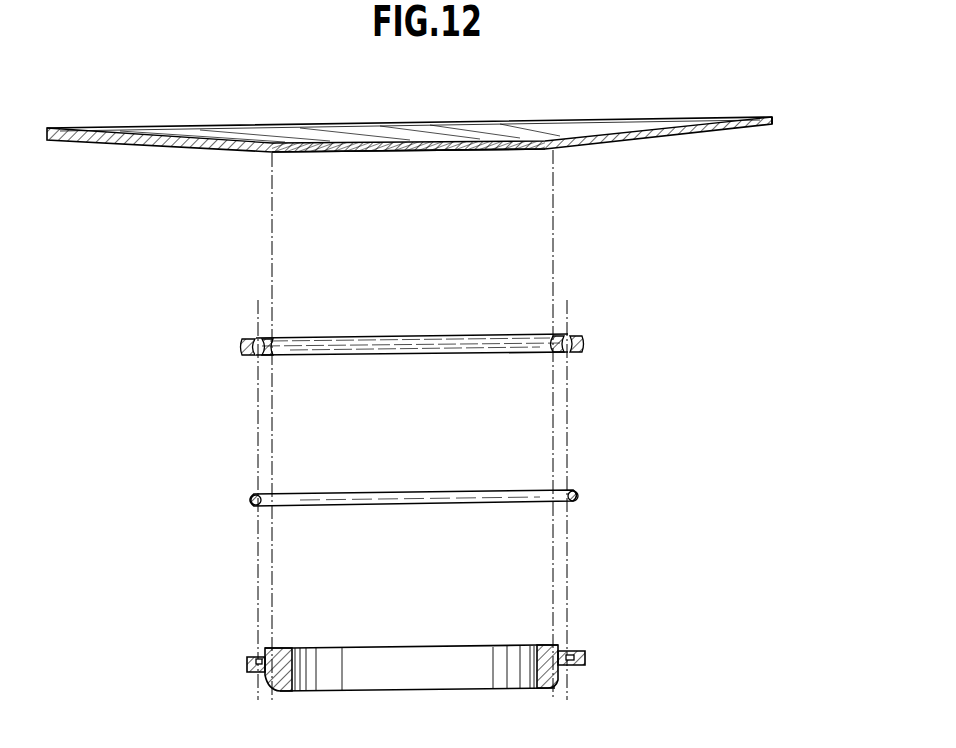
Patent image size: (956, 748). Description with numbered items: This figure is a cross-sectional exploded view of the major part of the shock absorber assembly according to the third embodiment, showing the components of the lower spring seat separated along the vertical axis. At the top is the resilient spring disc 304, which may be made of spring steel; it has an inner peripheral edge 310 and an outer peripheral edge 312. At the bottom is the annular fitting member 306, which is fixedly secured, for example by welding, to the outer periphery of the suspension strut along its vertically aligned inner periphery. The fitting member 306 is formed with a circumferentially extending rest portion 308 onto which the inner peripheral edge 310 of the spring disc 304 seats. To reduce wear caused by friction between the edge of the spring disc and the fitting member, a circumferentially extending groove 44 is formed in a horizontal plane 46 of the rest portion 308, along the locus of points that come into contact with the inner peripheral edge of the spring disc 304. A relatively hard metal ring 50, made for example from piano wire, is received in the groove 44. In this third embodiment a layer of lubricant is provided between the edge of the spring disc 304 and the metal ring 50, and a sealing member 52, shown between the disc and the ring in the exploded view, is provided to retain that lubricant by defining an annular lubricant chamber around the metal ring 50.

The resilient spring disc 304 is at (598, 135).
The outer peripheral edge 312 is at (770, 117).
The inner peripheral edge 310 is at (548, 144).
The sealing member 52 is at (567, 323).
The metal ring 50 is at (468, 492).
The annular fitting member 306 is at (540, 640).
The rest portion 308 is at (268, 650).
The circumferentially extending groove 44 is at (258, 672).
The horizontal plane 46 is at (588, 658).